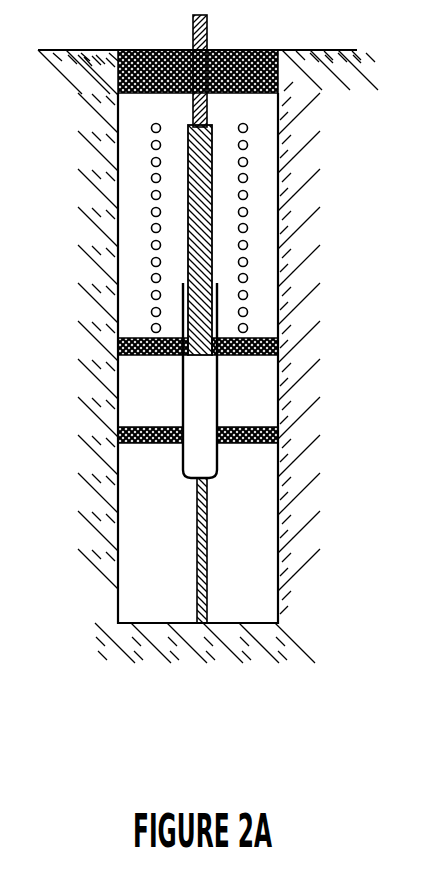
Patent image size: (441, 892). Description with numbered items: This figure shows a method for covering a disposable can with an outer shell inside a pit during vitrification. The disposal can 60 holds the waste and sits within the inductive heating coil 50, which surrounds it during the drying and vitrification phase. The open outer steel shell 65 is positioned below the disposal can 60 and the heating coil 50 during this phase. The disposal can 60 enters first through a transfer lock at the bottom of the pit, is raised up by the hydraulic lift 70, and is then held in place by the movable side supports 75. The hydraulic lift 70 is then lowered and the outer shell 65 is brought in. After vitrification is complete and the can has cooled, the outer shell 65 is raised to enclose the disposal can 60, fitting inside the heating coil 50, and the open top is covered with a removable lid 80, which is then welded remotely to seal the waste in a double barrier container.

The inductive heating coil 50 is at (248, 178).
The disposal can 60 is at (213, 267).
The outer steel shell 65 is at (183, 393).
The hydraulic lift 70 is at (208, 595).
The movable side supports 75 is at (279, 343).
The removable lid 80 is at (118, 94).